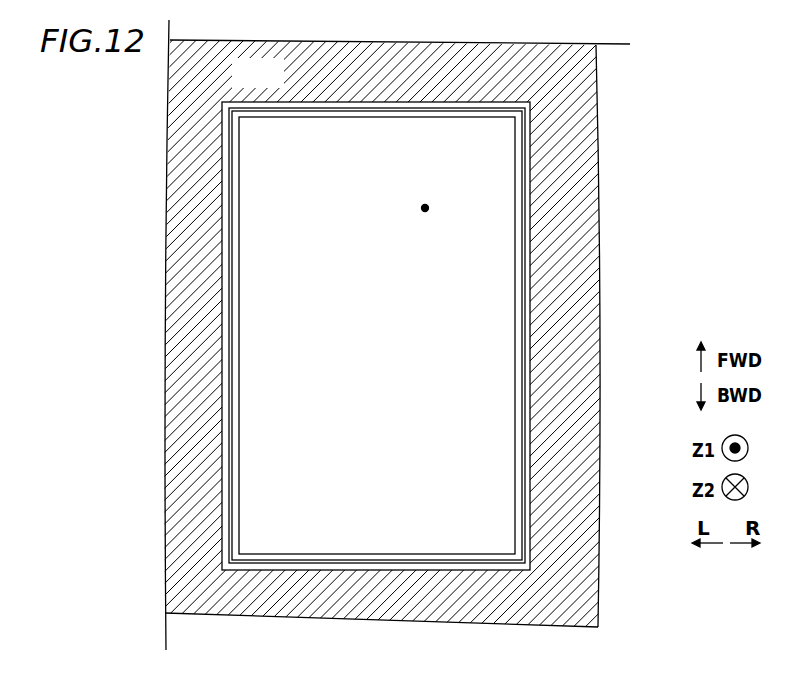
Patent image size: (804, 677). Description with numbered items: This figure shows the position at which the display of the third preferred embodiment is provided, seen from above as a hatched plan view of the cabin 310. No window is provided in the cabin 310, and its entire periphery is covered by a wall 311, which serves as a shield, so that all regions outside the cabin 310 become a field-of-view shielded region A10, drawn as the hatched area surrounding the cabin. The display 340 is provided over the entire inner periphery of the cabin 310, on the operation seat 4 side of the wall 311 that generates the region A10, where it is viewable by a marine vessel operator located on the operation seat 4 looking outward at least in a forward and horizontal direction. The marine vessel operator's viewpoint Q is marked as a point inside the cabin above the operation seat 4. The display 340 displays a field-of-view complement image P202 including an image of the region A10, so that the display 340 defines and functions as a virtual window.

The field-of-view shielded region A10 is at (402, 335).
The wall 311 is at (377, 334).
The cabin 310 is at (355, 106).
The display 340 is at (376, 335).
The field-of-view complement image P202 is at (238, 143).
The marine vessel operator's viewpoint Q is at (447, 174).
The operation seat 4 is at (431, 203).